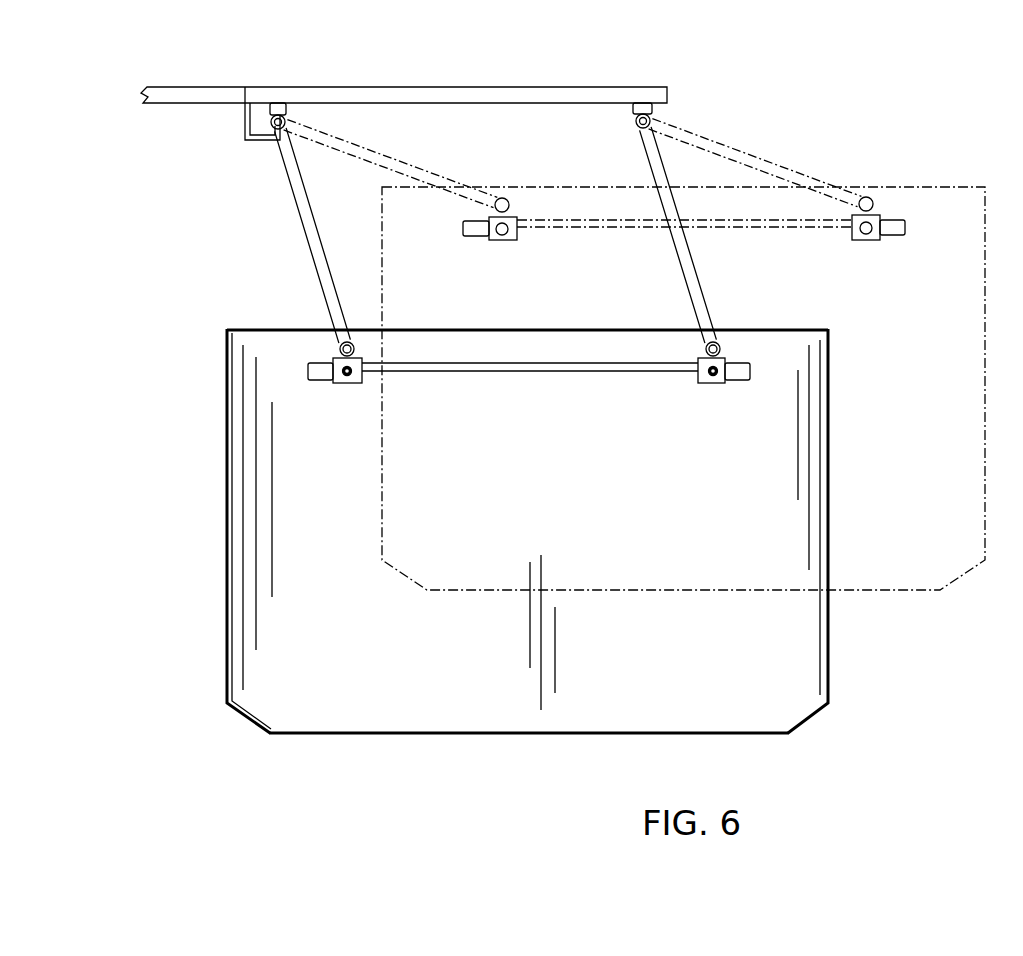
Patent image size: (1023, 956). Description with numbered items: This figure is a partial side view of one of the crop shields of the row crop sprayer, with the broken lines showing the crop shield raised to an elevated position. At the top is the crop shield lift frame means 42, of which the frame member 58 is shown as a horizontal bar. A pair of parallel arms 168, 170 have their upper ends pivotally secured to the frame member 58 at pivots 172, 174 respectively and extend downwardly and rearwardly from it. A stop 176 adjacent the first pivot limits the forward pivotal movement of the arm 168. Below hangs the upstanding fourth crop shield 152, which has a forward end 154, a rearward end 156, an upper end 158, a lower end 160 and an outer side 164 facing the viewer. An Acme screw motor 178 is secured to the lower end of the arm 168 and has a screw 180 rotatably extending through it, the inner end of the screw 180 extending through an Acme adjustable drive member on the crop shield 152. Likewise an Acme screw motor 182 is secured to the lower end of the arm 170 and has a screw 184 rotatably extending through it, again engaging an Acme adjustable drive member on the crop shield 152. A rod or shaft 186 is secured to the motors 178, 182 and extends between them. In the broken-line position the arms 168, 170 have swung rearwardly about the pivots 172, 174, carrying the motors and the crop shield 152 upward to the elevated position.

The crop shield lift frame means 42 is at (195, 120).
The frame member 58 is at (510, 86).
The fourth crop shield 152 is at (218, 464).
The forward end 154 is at (227, 563).
The rearward end 156 is at (828, 663).
The upper end 158 is at (258, 330).
The lower end 160 is at (560, 733).
The outer side 164 is at (348, 553).
The arm 168 is at (305, 210).
The arm 170 is at (700, 292).
The pivot 172 is at (283, 113).
The pivot 174 is at (650, 121).
The stop 176 is at (247, 140).
The Acme screw motor 178 is at (357, 383).
The screw 180 is at (338, 370).
The Acme screw motor 182 is at (725, 388).
The screw 184 is at (750, 367).
The rod or shaft 186 is at (522, 360).